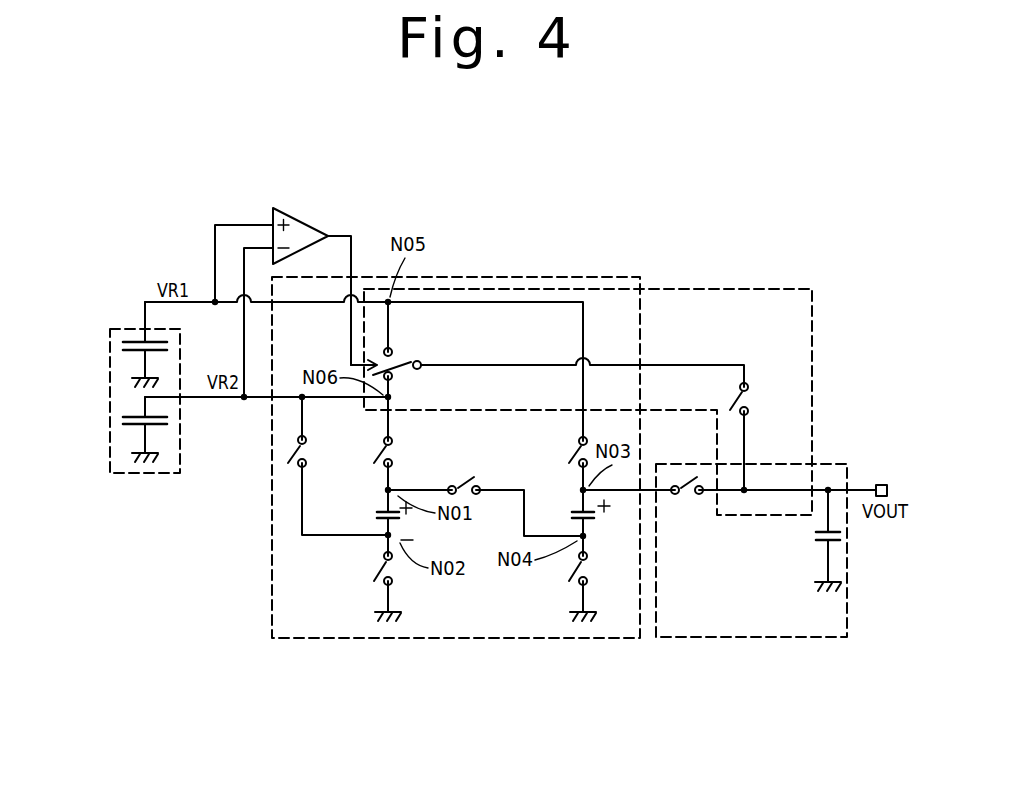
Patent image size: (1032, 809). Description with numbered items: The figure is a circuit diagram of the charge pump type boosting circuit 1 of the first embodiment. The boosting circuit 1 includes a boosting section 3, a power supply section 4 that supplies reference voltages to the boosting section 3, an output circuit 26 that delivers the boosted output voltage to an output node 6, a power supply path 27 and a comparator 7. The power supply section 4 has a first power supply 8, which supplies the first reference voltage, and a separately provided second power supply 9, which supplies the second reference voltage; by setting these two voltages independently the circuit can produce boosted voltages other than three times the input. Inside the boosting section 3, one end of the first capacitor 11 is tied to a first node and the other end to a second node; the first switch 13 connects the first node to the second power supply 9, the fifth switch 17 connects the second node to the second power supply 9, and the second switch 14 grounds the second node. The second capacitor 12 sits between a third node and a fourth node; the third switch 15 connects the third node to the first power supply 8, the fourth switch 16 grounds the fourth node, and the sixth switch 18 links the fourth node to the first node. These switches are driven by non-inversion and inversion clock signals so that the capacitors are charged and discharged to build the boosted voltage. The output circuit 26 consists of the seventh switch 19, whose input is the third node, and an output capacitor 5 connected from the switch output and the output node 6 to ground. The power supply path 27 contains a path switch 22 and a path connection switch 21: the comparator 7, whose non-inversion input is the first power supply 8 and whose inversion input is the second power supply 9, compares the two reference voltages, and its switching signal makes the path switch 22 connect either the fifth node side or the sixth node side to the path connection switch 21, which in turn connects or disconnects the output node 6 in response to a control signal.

The charge pump type boosting circuit 1 is at (716, 209).
The boosting section 3 is at (600, 277).
The power supply section 4 is at (110, 352).
The output capacitor 5 is at (846, 536).
The output node 6 is at (882, 485).
The comparator 7 is at (300, 218).
The first power supply 8 is at (132, 340).
The second power supply 9 is at (130, 418).
The first capacitor 11 is at (378, 506).
The second capacitor 12 is at (574, 506).
The first switch 13 is at (392, 446).
The second switch 14 is at (398, 574).
The third switch 15 is at (574, 453).
The fourth switch 16 is at (575, 573).
The fifth switch 17 is at (310, 452).
The sixth switch 18 is at (472, 494).
The seventh switch 19 is at (691, 498).
The path connection switch 21 is at (749, 392).
The path switch 22 is at (402, 372).
The output circuit 26 is at (827, 463).
The power supply path 27 is at (727, 289).